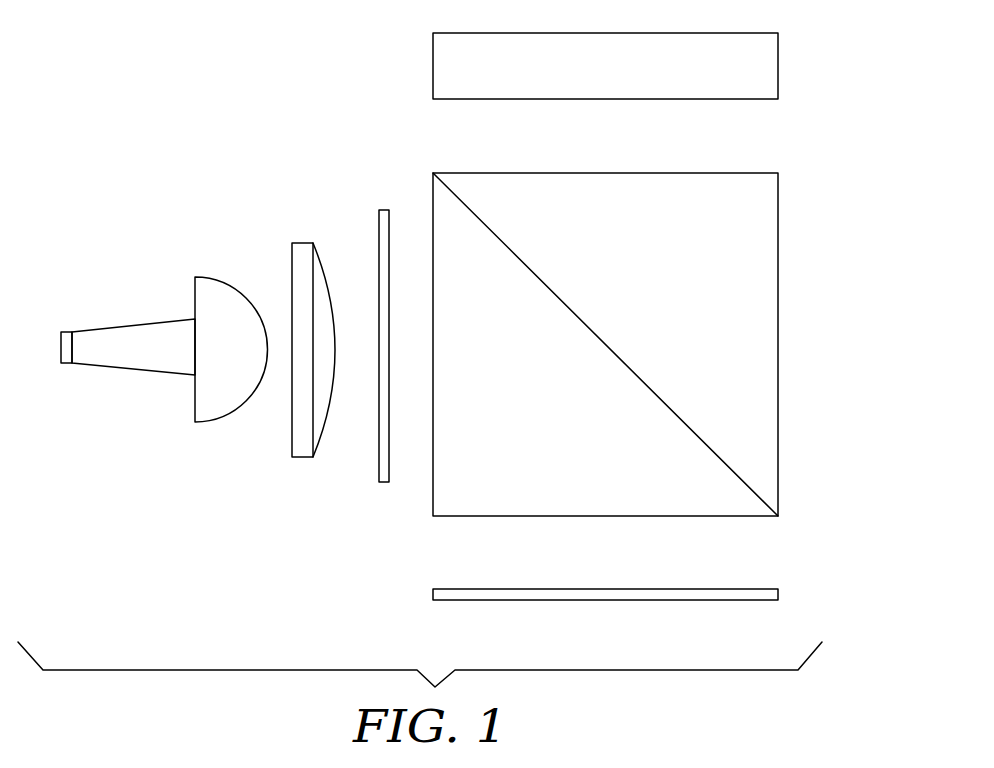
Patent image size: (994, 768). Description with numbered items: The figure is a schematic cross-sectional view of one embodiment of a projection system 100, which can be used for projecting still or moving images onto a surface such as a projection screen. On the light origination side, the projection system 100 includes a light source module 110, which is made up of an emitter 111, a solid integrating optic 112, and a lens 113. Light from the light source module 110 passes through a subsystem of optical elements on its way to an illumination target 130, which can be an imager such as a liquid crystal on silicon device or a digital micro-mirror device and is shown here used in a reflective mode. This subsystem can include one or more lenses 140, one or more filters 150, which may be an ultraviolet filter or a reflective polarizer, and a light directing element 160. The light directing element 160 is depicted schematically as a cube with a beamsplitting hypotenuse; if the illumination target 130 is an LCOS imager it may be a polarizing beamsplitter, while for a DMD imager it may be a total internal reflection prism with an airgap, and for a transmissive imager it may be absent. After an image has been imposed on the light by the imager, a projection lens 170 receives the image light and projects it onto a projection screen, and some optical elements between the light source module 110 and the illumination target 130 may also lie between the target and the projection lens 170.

The projection system 100 is at (197, 114).
The light source module 110 is at (263, 260).
The emitter 111 is at (67, 365).
The solid integrating optic 112 is at (117, 362).
The lens 113 is at (217, 402).
The lens 140 is at (304, 250).
The filter 150 is at (378, 225).
The light directing element 160 is at (778, 360).
The projection lens 170 is at (765, 63).
The illumination target 130 is at (752, 589).